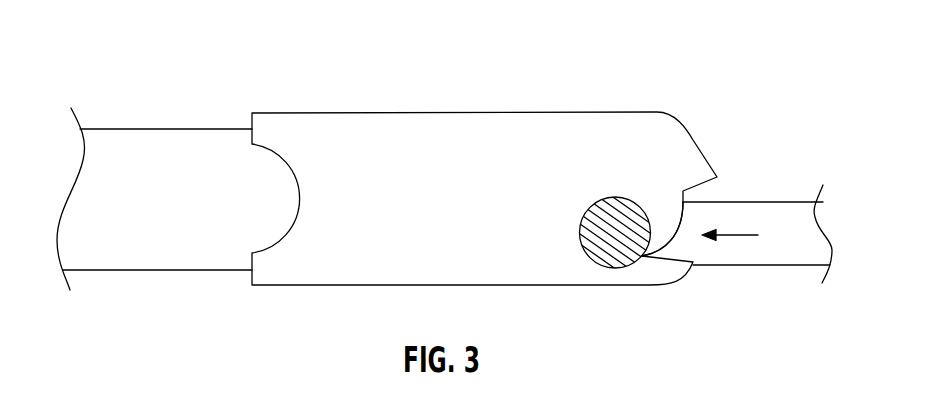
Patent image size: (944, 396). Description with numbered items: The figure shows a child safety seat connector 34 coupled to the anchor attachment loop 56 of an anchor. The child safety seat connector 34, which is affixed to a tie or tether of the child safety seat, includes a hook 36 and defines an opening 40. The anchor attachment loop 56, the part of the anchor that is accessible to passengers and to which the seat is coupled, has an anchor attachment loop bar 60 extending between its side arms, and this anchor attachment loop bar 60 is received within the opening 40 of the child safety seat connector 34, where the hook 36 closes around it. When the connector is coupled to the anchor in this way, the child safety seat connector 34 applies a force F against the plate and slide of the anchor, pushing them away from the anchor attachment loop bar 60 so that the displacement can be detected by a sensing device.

The child safety seat connector 34 is at (465, 111).
The hook 36 is at (665, 212).
The opening 40 is at (580, 225).
The anchor attachment loop 56 is at (790, 202).
The anchor attachment loop bar 60 is at (613, 237).
The force F is at (728, 232).